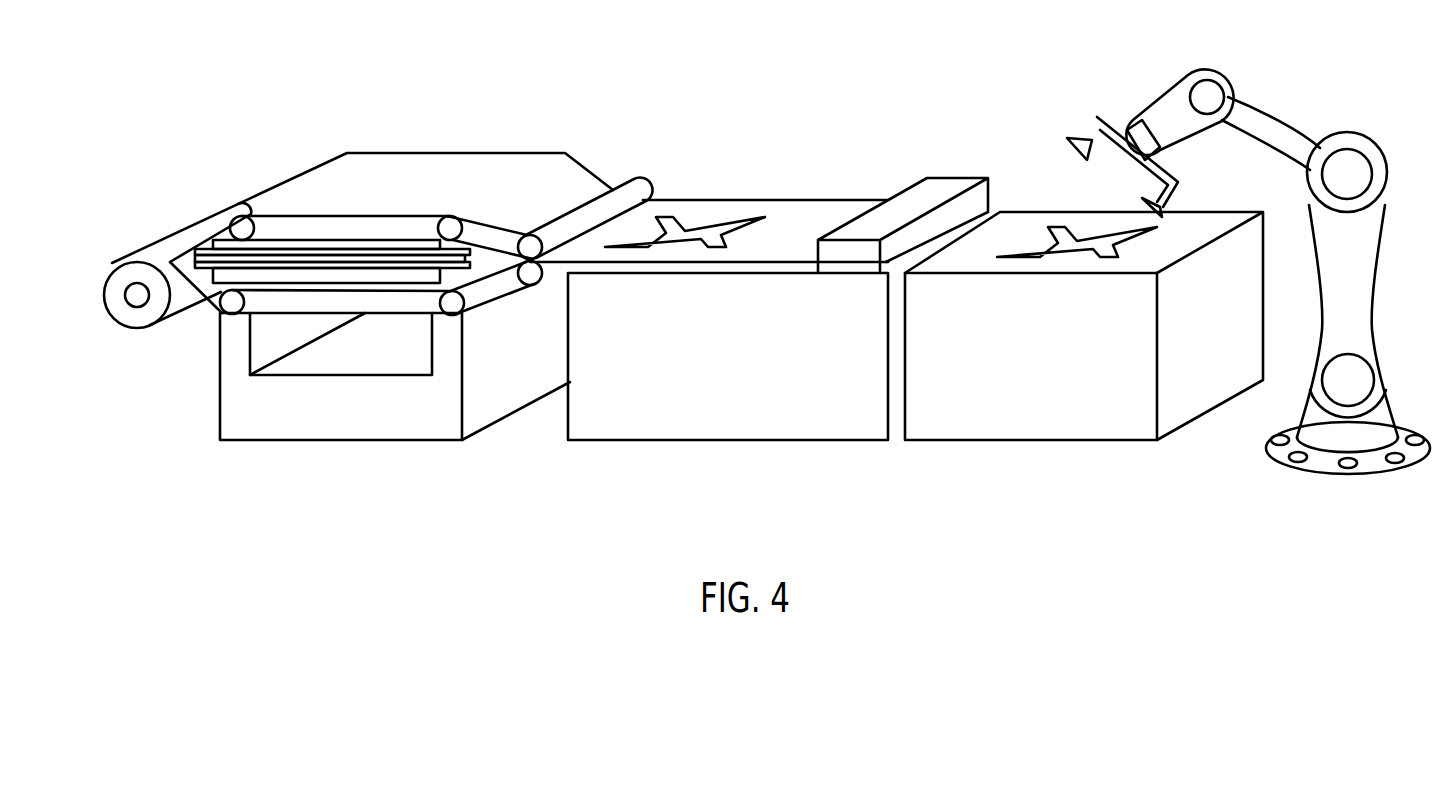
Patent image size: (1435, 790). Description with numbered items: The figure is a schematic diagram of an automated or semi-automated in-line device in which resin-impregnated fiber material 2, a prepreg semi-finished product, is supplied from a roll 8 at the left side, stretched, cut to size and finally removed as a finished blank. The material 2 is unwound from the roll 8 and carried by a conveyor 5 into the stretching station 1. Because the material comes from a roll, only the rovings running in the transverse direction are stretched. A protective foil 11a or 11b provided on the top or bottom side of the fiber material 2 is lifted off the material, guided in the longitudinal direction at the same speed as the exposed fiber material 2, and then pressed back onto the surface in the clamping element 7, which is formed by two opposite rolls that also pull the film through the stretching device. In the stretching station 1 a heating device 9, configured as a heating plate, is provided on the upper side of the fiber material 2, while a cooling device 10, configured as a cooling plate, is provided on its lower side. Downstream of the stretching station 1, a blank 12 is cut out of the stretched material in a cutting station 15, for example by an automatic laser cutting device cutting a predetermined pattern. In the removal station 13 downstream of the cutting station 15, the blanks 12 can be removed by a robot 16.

The stretching station 1 is at (252, 412).
The resin-impregnated fiber material 2 is at (483, 263).
The conveyor belt 5 is at (358, 269).
The clamping element 7 is at (620, 190).
The roll 8 is at (131, 322).
The heating device 9 is at (313, 245).
The cooling device 10 is at (392, 277).
The protective foil 11a is at (502, 158).
The protective foil 11b is at (313, 317).
The blank 12 is at (732, 222).
The removal station 13 is at (960, 430).
The cutting station 15 is at (640, 430).
The robot 16 is at (1275, 107).